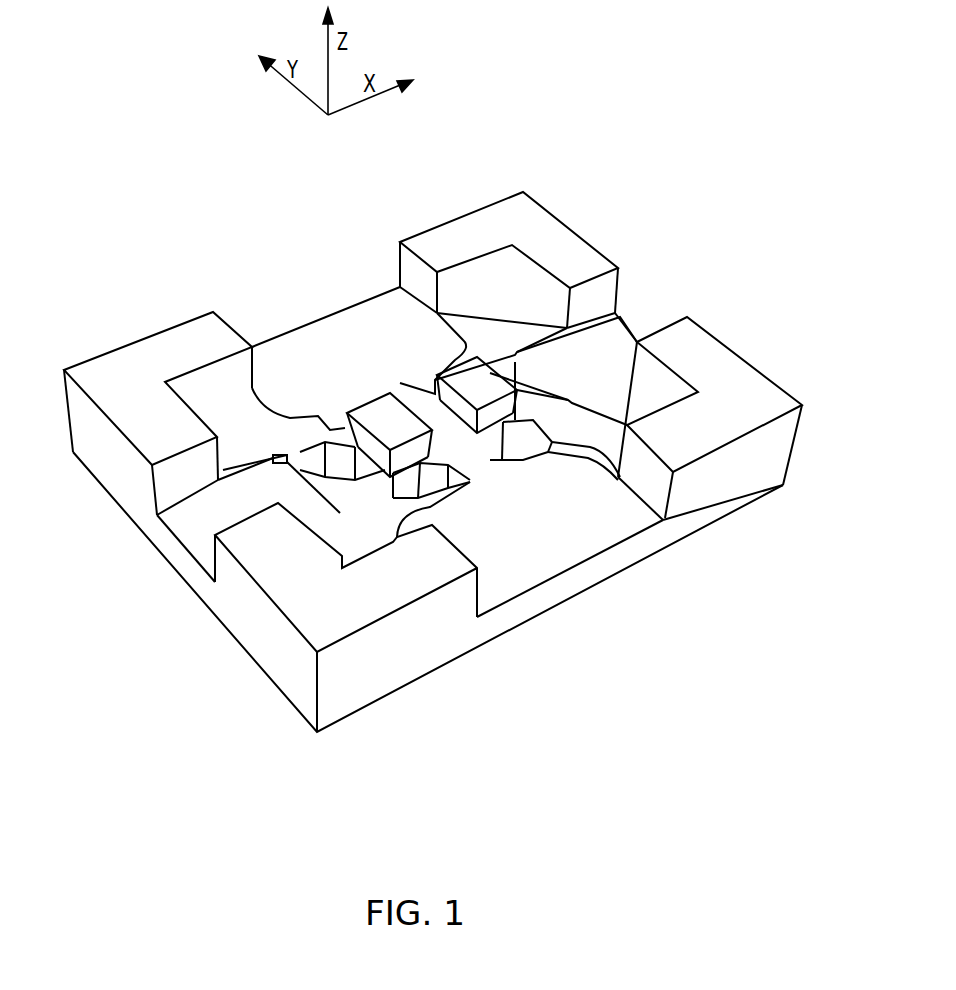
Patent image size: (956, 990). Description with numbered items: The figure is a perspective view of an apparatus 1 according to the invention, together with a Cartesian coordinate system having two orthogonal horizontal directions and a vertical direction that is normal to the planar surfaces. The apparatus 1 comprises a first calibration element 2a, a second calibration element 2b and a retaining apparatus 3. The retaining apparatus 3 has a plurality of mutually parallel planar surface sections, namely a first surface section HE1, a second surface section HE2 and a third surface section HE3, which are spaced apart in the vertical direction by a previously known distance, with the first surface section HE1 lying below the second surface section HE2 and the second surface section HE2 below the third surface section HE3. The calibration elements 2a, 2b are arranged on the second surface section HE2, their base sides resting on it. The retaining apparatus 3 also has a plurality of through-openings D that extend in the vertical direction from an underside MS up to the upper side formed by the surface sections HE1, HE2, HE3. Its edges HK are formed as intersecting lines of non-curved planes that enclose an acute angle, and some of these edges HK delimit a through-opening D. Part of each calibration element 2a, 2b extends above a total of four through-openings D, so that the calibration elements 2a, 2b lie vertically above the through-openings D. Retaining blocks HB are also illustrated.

The apparatus 1 is at (140, 728).
The first calibration element 2a is at (372, 400).
The second calibration element 2b is at (500, 380).
The retaining apparatus 3 is at (750, 490).
The underside MS is at (683, 538).
The first surface section HE1 is at (297, 338).
The second surface section HE2 is at (207, 363).
The third surface section HE3 is at (112, 365).
The edges HK is at (213, 430).
The retaining blocks HB is at (488, 470).
The through-openings D is at (418, 303).